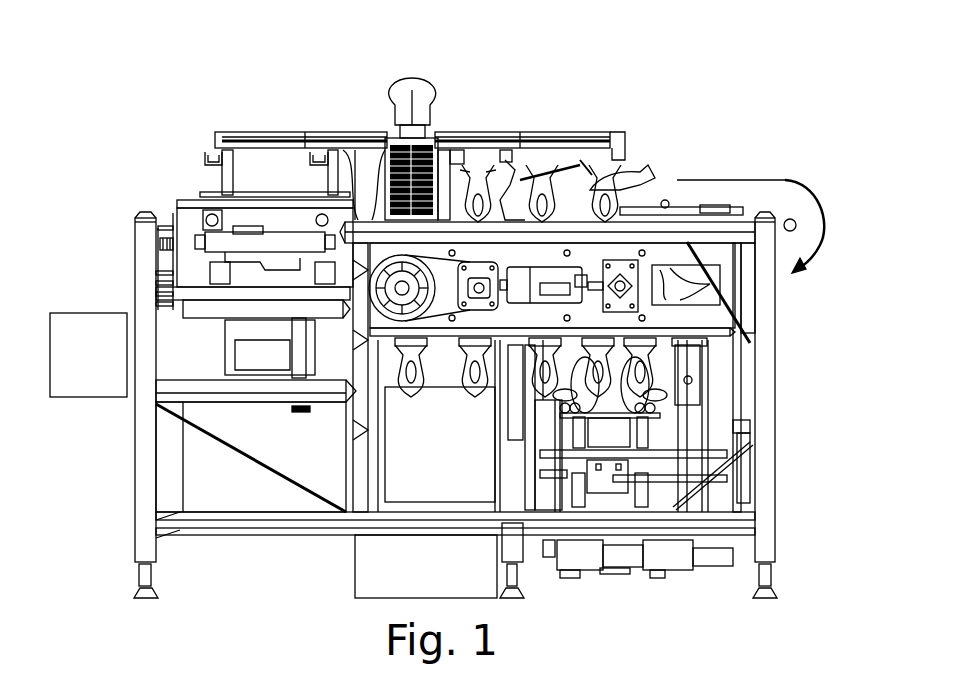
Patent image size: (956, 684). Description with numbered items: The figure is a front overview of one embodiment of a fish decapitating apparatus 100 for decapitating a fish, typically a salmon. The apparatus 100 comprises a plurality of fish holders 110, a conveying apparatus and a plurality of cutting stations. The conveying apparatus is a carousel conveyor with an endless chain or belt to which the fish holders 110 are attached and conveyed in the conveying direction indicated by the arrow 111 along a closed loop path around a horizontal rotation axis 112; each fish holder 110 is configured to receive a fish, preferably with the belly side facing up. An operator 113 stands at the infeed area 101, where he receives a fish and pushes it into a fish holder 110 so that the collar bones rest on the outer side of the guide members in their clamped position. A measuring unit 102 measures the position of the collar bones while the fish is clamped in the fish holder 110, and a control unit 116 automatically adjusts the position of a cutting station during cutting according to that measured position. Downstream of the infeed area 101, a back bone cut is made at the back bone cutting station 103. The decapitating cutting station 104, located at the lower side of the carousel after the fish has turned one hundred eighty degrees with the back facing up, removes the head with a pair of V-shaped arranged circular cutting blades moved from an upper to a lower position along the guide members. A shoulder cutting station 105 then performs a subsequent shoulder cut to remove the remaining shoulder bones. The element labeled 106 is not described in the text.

The fish decapitating apparatus 100 is at (734, 118).
The infeed area 101 is at (372, 118).
The measuring unit 102 is at (519, 194).
The back bone cutting station 103 is at (624, 178).
The decapitating cutting station 104 is at (620, 428).
The shoulder cutting station 105 is at (516, 352).
The left module 106 is at (254, 284).
The fish holder 110 is at (480, 172).
The arrow 111 is at (785, 180).
The horizontal rotation axis 112 is at (786, 219).
The operator 113 is at (400, 77).
The control unit 116 is at (87, 313).